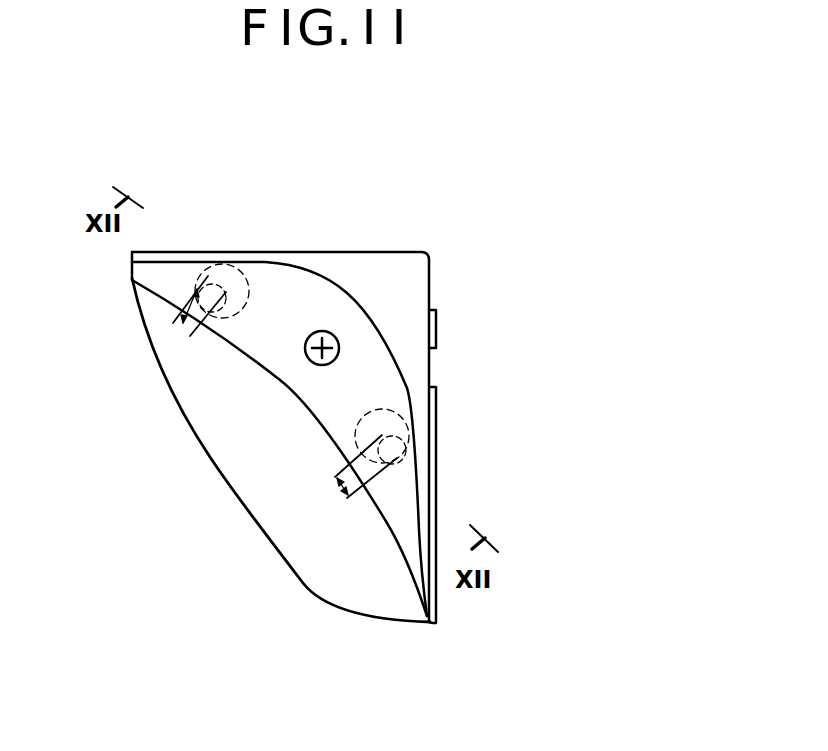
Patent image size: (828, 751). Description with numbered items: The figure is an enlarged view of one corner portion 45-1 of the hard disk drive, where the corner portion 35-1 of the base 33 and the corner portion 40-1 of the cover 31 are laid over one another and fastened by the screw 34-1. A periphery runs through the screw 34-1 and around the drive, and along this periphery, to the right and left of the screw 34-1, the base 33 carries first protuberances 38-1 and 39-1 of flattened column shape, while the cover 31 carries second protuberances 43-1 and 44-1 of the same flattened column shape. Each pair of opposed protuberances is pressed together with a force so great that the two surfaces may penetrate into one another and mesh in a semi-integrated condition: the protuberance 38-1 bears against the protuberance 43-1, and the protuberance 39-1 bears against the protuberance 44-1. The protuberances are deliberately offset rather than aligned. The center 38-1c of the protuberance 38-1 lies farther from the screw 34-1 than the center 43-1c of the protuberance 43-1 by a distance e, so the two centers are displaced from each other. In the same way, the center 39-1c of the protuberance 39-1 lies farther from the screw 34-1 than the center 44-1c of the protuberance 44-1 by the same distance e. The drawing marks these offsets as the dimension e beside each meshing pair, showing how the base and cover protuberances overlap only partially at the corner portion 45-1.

The corner portion 45-1 is at (458, 131).
The base 33 is at (426, 246).
The cover 31 is at (208, 467).
The corner portion of the base 35-1 is at (412, 290).
The corner portion of the cover 40-1 is at (390, 385).
The screw 34-1 is at (323, 330).
The first protuberance 39-1 is at (213, 263).
The second protuberance 44-1 is at (250, 270).
The center of the protuberance 39-1c is at (197, 276).
The center of the protuberance 44-1c is at (228, 295).
The second protuberance 43-1 is at (437, 425).
The first protuberance 38-1 is at (437, 465).
The center of the protuberance 43-1c is at (378, 436).
The center of the protuberance 38-1c is at (391, 463).